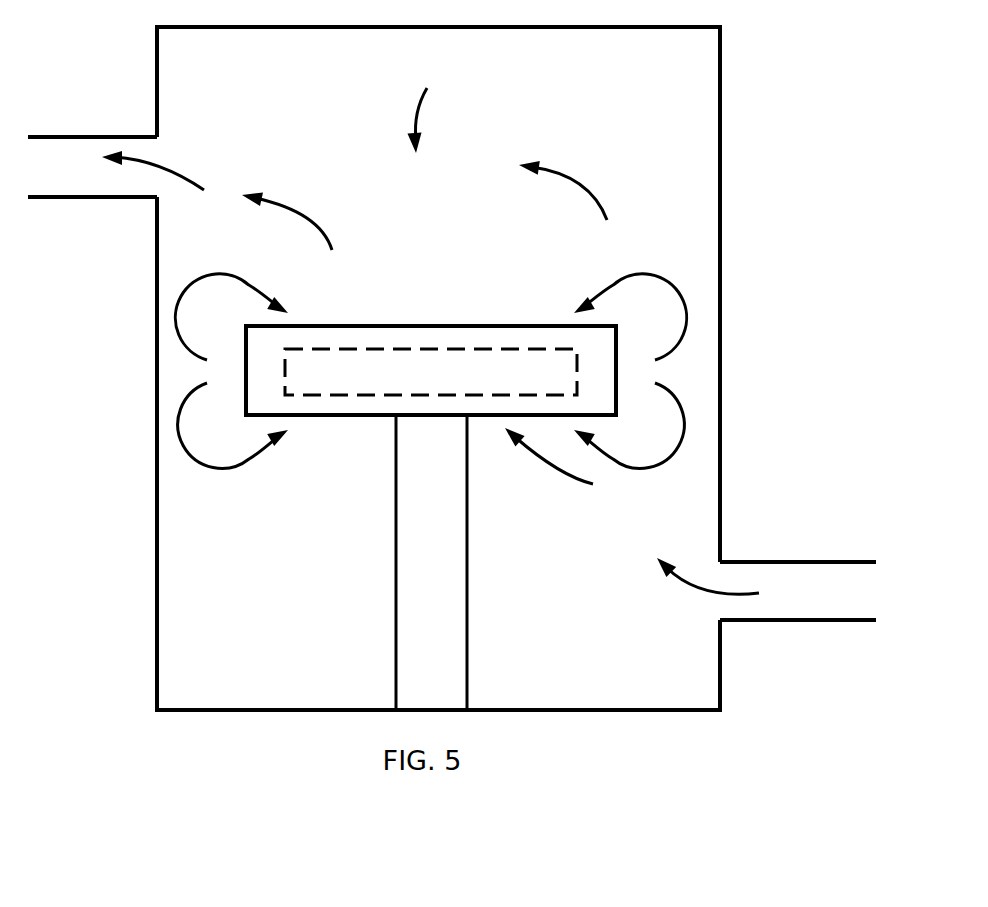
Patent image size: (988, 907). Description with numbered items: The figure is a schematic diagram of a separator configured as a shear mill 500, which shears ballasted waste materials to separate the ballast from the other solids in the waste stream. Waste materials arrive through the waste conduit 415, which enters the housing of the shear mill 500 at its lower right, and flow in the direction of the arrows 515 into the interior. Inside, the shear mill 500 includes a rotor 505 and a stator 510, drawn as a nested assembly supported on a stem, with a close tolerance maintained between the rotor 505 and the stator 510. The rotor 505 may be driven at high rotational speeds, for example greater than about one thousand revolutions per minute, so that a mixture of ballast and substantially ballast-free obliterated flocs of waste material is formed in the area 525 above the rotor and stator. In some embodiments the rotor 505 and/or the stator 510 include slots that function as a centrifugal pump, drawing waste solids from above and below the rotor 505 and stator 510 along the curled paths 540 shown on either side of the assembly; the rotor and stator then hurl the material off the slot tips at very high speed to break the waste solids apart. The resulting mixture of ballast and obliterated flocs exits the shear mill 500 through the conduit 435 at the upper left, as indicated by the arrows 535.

The shear mill 500 is at (748, 195).
The rotor 505 is at (414, 379).
The stator 510 is at (395, 323).
The arrows 515 is at (538, 463).
The area 525 is at (430, 105).
The arrows 535 is at (173, 165).
The paths 540 is at (217, 283).
The waste conduit 415 is at (857, 562).
The conduit 435 is at (50, 137).